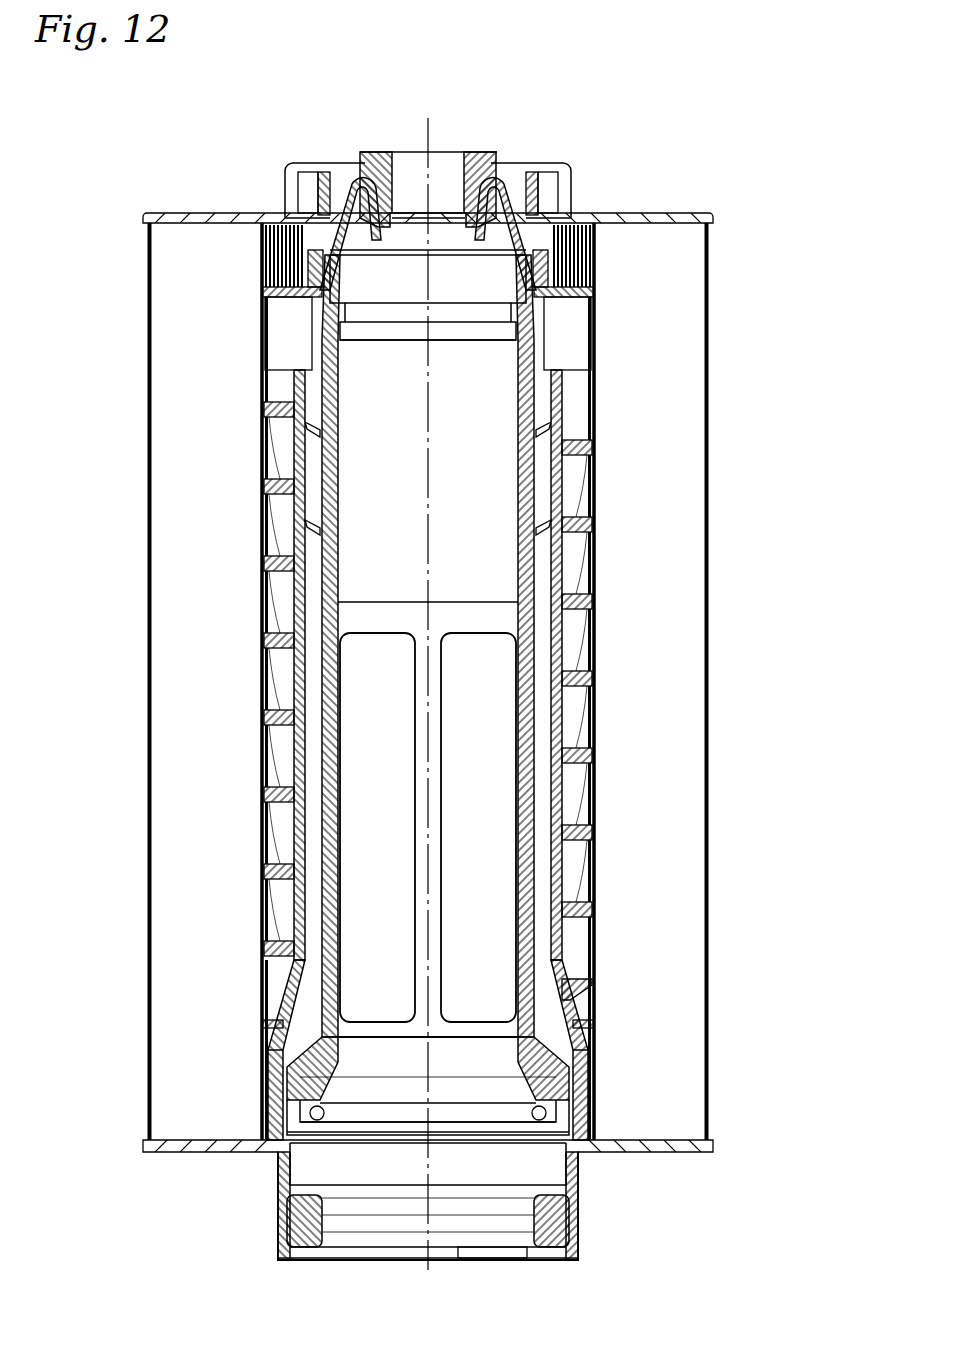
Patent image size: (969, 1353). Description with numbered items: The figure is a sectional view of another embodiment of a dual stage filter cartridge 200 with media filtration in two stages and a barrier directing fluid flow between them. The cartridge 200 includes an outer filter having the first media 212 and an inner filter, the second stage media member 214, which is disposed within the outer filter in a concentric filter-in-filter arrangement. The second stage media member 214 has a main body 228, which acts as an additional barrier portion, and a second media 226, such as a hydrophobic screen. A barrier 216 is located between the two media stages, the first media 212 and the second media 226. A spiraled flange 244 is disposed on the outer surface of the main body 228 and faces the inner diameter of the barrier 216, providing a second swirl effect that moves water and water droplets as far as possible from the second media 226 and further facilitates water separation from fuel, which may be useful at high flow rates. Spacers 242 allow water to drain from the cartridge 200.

The filter cartridge 200 is at (655, 143).
The first media 212 is at (695, 342).
The second stage media member 214 is at (535, 538).
The barrier 216 is at (598, 317).
The second media 226 is at (497, 860).
The main body 228 is at (535, 440).
The spacers 242 is at (287, 1067).
The spiraled flange 244 is at (267, 453).